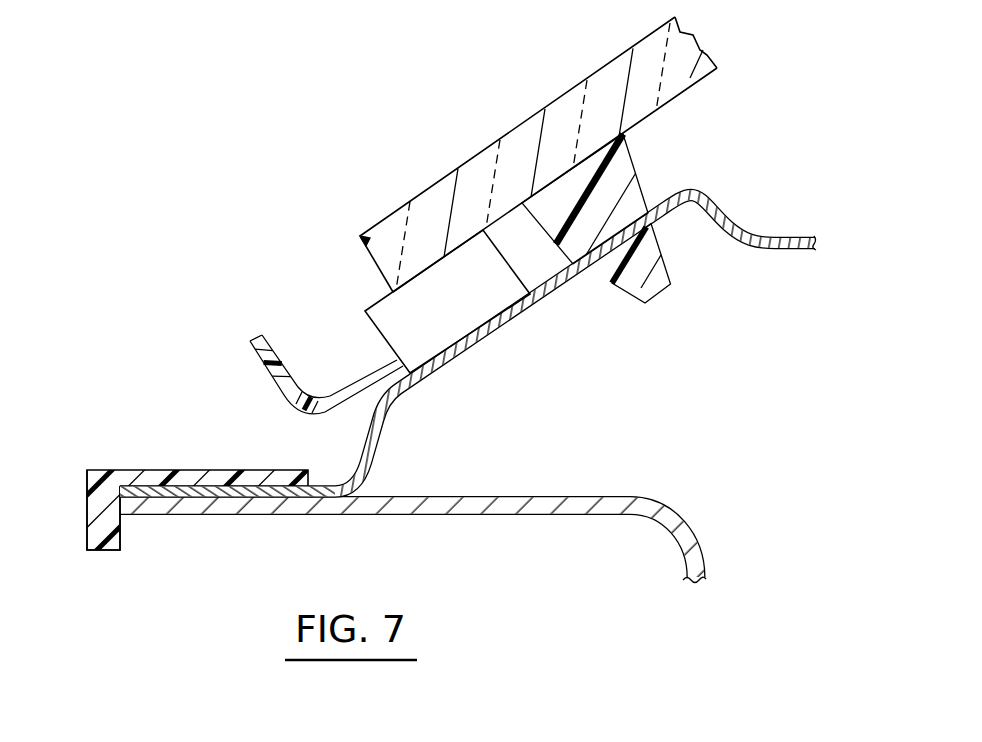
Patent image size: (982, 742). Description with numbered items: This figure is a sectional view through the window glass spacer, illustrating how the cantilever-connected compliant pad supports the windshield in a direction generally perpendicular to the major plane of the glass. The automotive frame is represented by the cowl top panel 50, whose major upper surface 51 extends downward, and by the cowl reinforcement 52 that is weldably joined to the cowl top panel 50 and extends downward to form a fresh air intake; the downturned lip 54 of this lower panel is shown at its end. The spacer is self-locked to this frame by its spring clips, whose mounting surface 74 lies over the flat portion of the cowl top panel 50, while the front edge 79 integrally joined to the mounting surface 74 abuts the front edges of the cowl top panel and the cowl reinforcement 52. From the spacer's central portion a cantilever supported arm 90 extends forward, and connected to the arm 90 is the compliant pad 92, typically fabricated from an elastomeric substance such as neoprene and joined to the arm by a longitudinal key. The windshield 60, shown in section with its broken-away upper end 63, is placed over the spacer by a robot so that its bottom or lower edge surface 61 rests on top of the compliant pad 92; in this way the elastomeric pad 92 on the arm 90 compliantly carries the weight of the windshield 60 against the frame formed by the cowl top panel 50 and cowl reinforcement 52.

The cowl top panel 50 is at (430, 380).
The major upper surface 51 is at (560, 270).
The cowl reinforcement 52 is at (533, 496).
The curved lip of plate 54 is at (707, 557).
The windshield 60 is at (530, 117).
The bottom edge surface of the windshield 61 is at (357, 237).
The broken-away end of strip 63 is at (678, 99).
The mounting surface 74 is at (157, 470).
The front edge 79 is at (86, 508).
The cantilever supported arm 90 is at (341, 390).
The compliant pad 92 is at (511, 268).